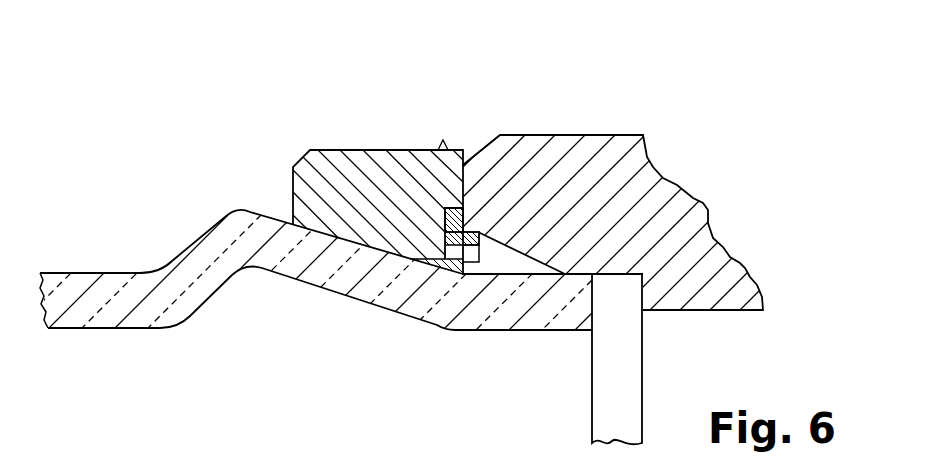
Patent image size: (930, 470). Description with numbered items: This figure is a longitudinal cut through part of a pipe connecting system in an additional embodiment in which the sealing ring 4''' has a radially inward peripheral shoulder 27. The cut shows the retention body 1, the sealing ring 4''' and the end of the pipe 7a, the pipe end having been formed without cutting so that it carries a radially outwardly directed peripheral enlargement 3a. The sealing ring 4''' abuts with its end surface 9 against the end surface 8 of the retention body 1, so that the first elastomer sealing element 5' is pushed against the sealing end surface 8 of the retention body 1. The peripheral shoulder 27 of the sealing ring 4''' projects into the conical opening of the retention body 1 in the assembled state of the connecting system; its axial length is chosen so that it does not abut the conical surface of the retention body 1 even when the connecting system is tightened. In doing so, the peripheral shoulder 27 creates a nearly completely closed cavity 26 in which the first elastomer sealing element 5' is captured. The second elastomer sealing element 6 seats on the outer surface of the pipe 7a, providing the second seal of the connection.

The retention body 1 is at (584, 158).
The peripheral enlargement 3a is at (240, 216).
The sealing ring 4''' is at (371, 165).
The first elastomer sealing element 5' is at (421, 157).
The second elastomer sealing element 6 is at (411, 263).
The pipe 7a is at (86, 322).
The end surface of the retention body 8 is at (455, 196).
The end surface of the sealing ring 9 is at (486, 174).
The cavity 26 is at (445, 234).
The peripheral shoulder 27 is at (478, 247).